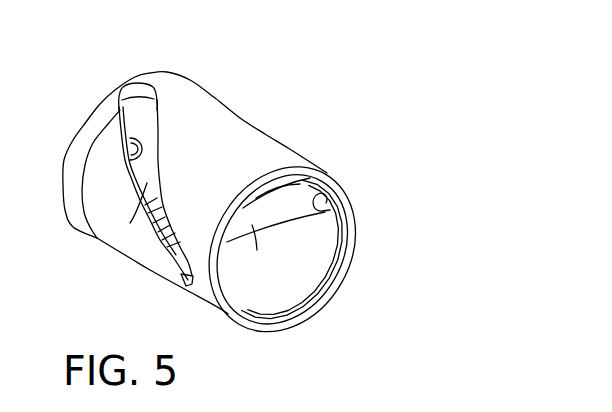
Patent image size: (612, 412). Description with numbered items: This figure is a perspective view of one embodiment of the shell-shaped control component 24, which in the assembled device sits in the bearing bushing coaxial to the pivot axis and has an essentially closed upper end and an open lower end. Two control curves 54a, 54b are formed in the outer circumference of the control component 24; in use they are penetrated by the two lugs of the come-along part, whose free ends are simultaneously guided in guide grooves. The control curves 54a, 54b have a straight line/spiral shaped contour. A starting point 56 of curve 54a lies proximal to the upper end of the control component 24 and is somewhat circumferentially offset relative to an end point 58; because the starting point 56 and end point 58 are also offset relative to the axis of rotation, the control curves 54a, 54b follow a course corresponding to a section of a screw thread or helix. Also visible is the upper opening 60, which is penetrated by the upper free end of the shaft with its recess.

The control component 24 is at (284, 93).
The starting point 56 is at (135, 97).
The upper opening 60 is at (130, 148).
The control curve 54a is at (130, 223).
The control curve 54b is at (257, 250).
The end point 58 is at (330, 210).